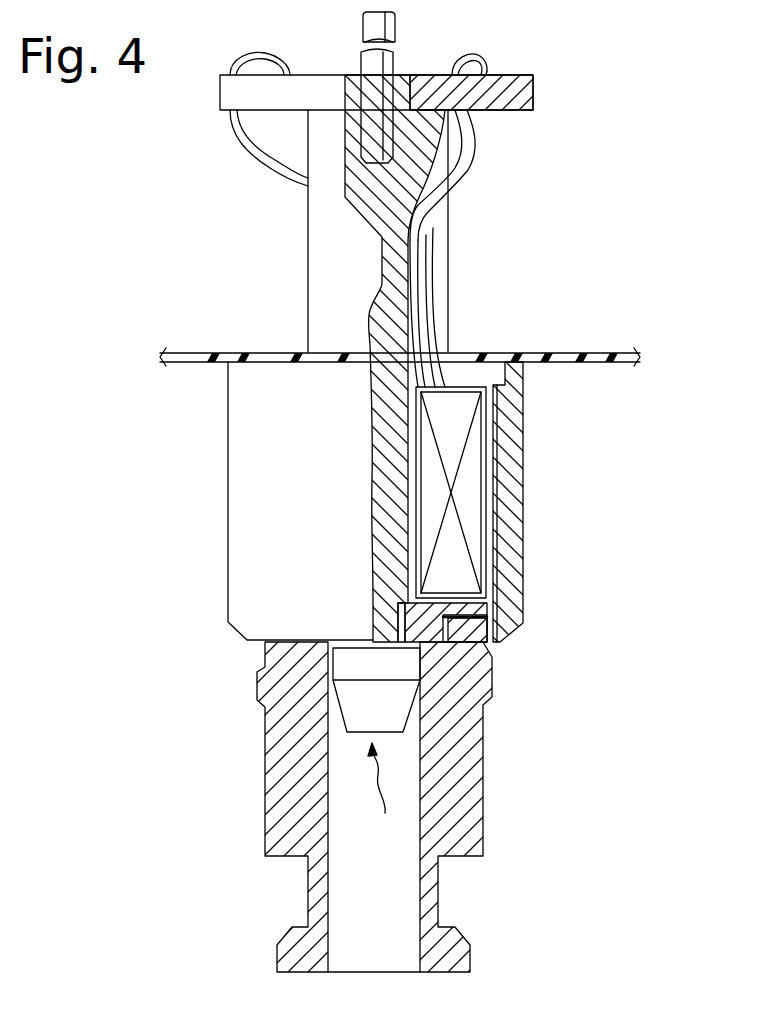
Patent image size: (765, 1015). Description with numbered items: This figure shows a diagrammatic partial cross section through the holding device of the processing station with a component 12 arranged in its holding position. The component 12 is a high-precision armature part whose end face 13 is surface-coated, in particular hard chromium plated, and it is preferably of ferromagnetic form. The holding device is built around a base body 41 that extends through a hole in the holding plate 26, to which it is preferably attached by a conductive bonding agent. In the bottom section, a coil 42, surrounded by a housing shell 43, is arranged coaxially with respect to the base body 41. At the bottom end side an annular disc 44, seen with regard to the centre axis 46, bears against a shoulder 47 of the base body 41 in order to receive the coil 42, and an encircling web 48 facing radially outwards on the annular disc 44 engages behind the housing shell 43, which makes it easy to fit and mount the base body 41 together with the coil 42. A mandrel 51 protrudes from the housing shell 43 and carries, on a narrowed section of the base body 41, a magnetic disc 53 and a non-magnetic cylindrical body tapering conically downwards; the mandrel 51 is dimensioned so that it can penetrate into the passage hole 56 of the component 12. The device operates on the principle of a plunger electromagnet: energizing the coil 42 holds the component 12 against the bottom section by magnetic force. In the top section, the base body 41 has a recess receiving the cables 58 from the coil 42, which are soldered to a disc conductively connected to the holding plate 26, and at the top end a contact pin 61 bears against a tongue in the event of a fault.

The component 12 is at (288, 712).
The end face 13 is at (465, 643).
The holding plate 26 is at (585, 353).
The base body 41 is at (440, 237).
The coil 42 is at (472, 455).
The housing shell 43 is at (503, 487).
The annular disc 44 is at (440, 605).
The centre axis 46 is at (378, 293).
The shoulder 47 is at (399, 601).
The encircling web 48 is at (470, 620).
The mandrel 51 is at (380, 794).
The magnetic disc 53 is at (518, 96).
The passage hole 56 is at (383, 942).
The cables 58 is at (270, 160).
The contact pin 61 is at (363, 28).